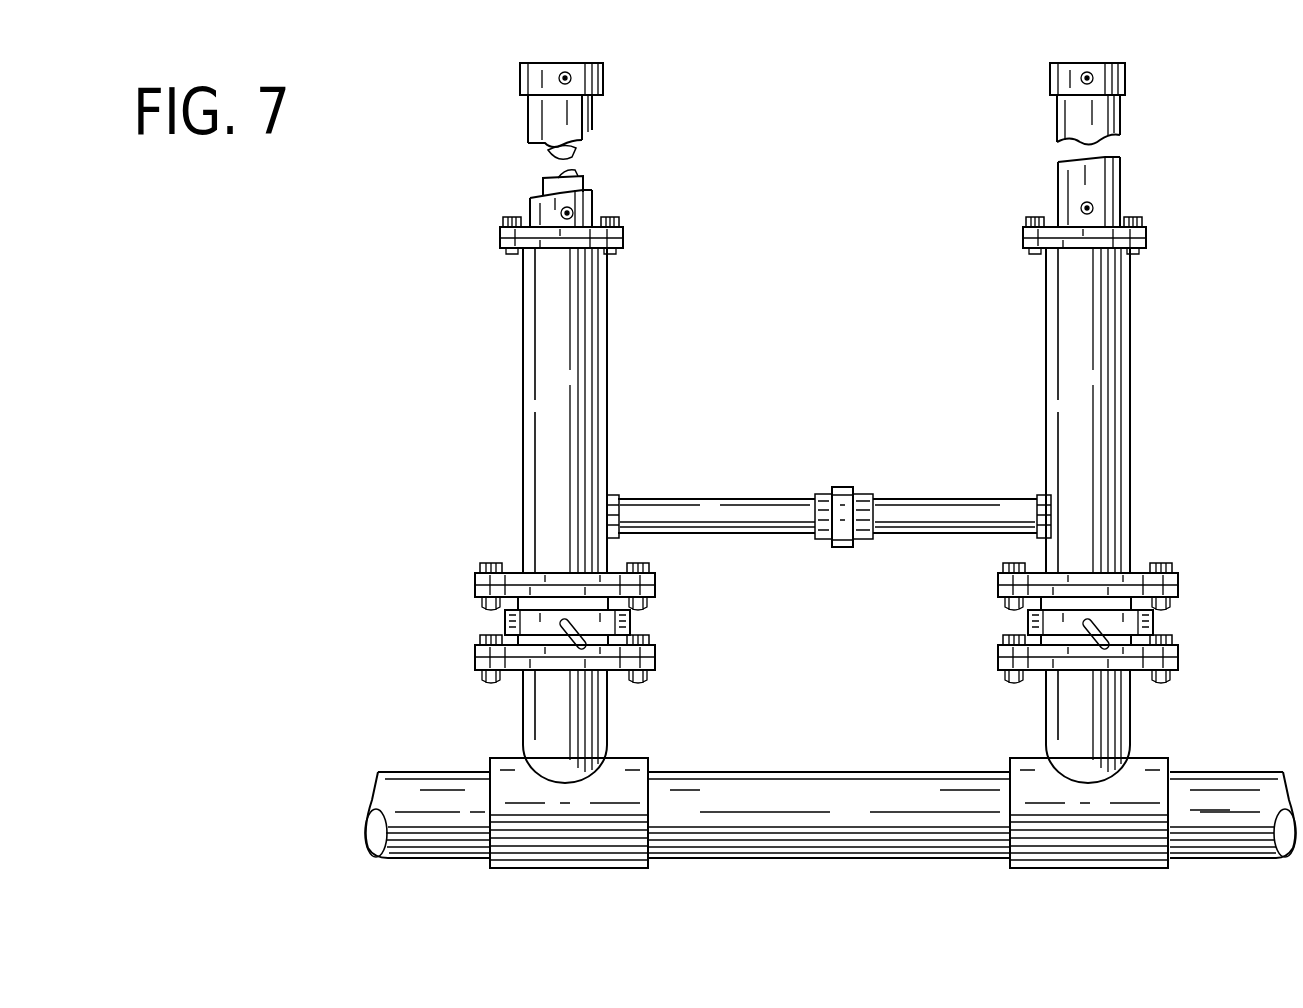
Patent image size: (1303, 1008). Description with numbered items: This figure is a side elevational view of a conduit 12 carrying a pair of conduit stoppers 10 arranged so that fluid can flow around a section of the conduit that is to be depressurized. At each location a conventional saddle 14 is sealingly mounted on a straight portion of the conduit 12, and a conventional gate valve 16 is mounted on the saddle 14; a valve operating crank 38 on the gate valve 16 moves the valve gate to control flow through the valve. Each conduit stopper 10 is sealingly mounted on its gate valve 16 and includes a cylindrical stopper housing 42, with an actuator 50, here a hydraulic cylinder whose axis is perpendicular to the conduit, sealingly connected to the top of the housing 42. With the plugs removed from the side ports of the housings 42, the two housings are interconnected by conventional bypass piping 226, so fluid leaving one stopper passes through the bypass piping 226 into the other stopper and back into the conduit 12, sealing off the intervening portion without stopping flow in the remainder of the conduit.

The conduit stopper 10 is at (522, 372).
The conduit 12 is at (897, 835).
The saddle 14 is at (522, 735).
The gate valve 16 is at (478, 594).
The valve operating crank 38 is at (1094, 652).
The stopper housing 42 is at (590, 333).
The actuator 50 is at (596, 206).
The bypass piping 226 is at (765, 512).